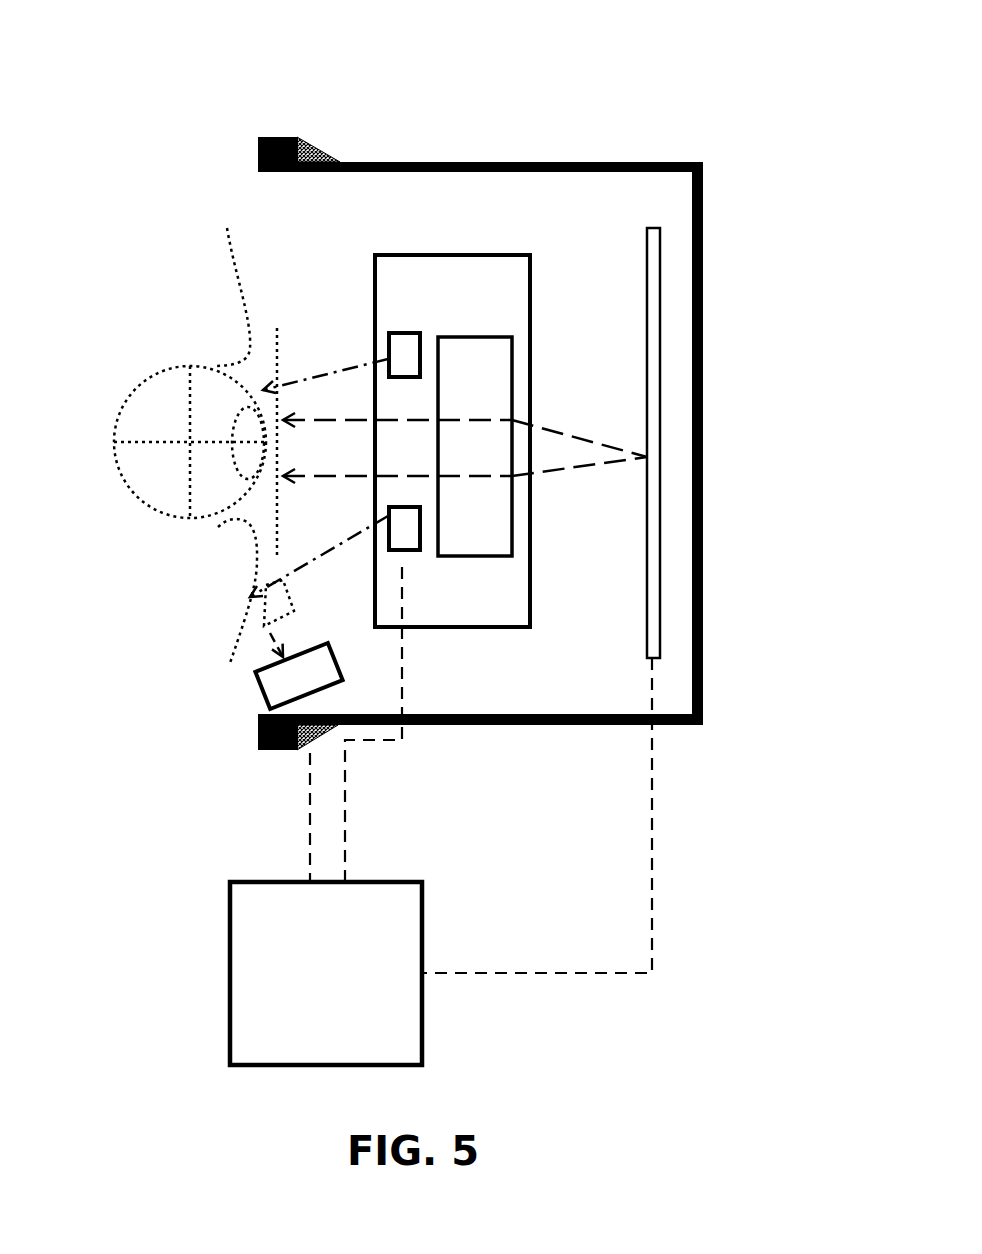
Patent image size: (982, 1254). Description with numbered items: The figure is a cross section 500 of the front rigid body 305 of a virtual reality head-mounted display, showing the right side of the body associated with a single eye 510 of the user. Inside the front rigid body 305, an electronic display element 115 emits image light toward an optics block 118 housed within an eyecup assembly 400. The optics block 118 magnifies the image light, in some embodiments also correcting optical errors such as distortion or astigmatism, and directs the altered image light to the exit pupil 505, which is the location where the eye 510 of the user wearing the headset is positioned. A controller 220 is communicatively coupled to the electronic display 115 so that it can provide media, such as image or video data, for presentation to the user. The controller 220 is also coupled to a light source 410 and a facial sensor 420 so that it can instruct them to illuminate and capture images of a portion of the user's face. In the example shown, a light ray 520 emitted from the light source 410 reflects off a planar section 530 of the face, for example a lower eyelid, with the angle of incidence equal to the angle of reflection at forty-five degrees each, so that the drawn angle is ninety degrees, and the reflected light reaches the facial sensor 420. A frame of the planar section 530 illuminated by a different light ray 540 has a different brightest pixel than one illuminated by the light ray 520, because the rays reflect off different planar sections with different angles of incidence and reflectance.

The cross section 500 is at (140, 85).
The front rigid body 305 is at (662, 162).
The electronic display element 115 is at (662, 268).
The eyecup assembly 400 is at (441, 255).
The optics block 118 is at (457, 337).
The light source 410 is at (420, 533).
The light ray 540 is at (363, 365).
The light ray 520 is at (312, 562).
The eye 510 is at (155, 510).
The exit pupil 505 is at (277, 443).
The planar section 530 is at (243, 600).
The facial sensor 420 is at (257, 688).
The controller 220 is at (306, 997).